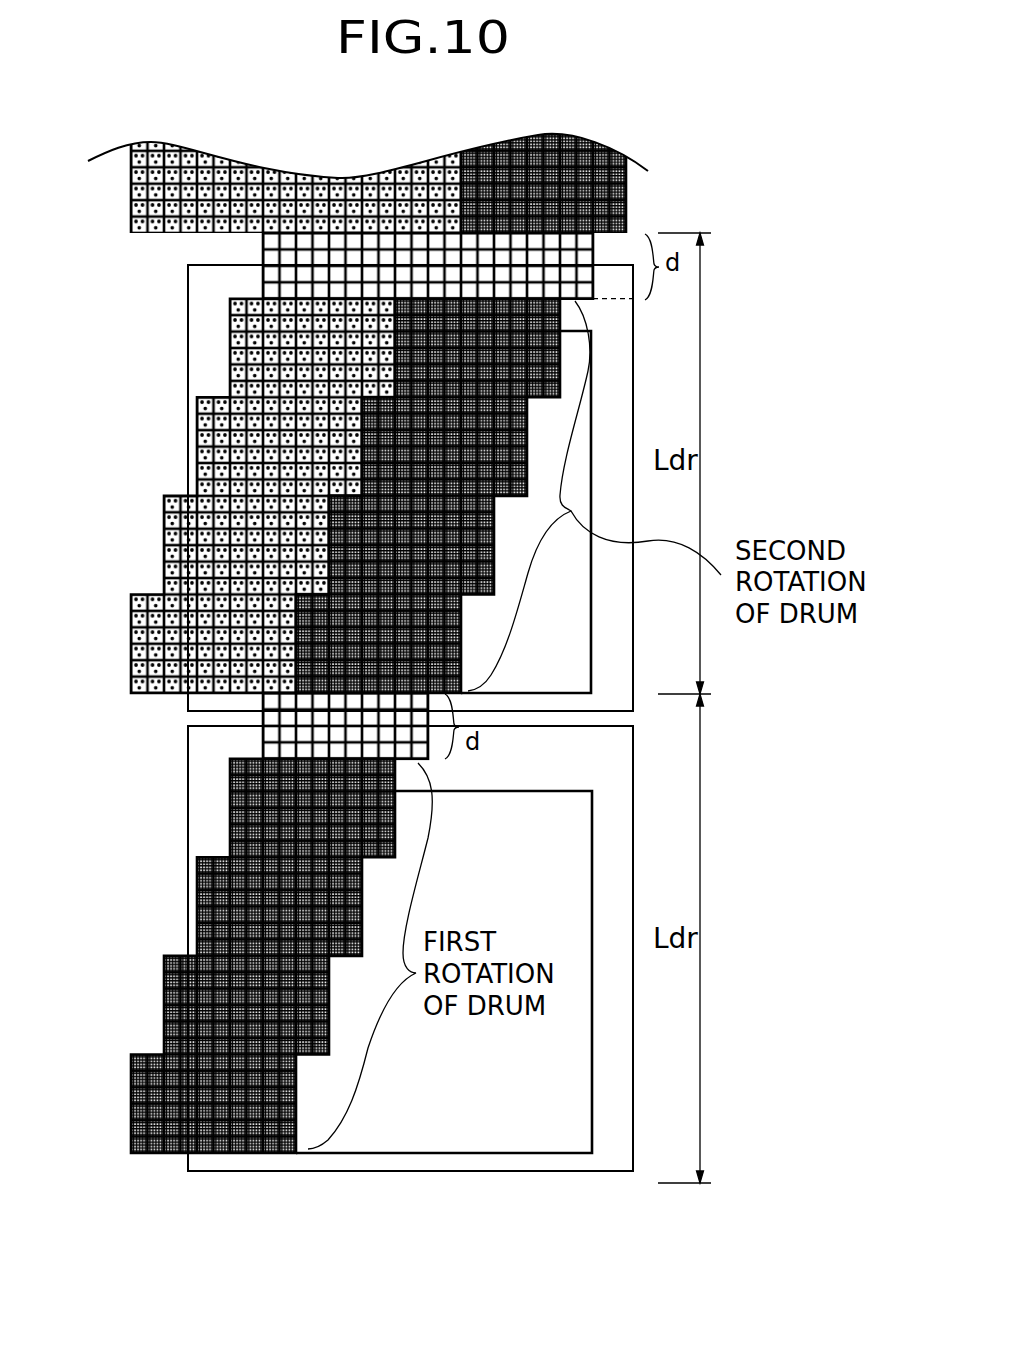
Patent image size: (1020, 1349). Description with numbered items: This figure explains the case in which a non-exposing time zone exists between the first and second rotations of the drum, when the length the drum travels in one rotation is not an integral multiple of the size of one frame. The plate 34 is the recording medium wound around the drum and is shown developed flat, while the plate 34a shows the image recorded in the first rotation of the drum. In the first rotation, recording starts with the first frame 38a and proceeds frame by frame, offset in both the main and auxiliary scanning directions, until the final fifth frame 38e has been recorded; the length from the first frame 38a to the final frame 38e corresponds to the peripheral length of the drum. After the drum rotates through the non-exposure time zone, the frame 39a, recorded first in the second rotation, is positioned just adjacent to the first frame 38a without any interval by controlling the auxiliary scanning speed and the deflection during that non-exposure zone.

The plate 34 is at (175, 268).
The plate 34a is at (176, 768).
The first frame 38a is at (127, 583).
The frame 39a is at (464, 638).
The fifth frame 38e is at (400, 810).